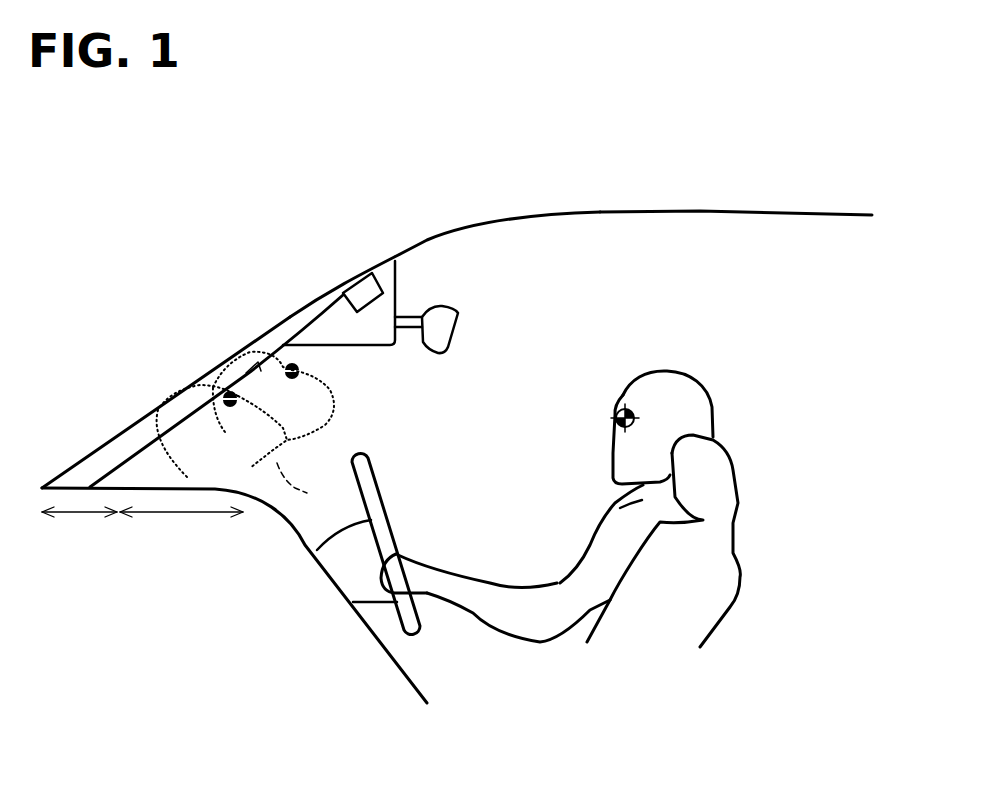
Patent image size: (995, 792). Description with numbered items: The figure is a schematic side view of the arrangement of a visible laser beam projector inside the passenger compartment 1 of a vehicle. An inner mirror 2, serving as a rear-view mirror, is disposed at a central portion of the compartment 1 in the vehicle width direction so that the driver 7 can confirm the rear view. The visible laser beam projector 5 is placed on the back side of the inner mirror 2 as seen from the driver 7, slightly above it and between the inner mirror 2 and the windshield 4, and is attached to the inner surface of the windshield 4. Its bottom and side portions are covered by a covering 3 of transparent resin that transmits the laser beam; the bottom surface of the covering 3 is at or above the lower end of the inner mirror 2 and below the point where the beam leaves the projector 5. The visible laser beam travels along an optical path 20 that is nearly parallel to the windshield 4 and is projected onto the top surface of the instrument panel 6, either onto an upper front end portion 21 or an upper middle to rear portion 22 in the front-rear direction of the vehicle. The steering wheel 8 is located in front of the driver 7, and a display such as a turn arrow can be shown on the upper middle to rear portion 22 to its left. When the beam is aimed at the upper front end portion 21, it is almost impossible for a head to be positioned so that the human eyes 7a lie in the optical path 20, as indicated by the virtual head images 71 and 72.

The passenger compartment 1 is at (637, 243).
The inner mirror 2 is at (453, 303).
The covering 3 is at (400, 267).
The windshield 4 is at (422, 240).
The visible laser beam projector 5 is at (357, 287).
The instrument panel 6 is at (298, 532).
The driver 7 is at (678, 370).
The human eyes 7a is at (302, 370).
The steering wheel 8 is at (365, 482).
The optical path 20 is at (130, 457).
The upper front end portion 21 is at (78, 513).
The upper middle to rear portion 22 is at (183, 513).
The virtual head image 71 is at (340, 393).
The virtual head image 72 is at (309, 486).